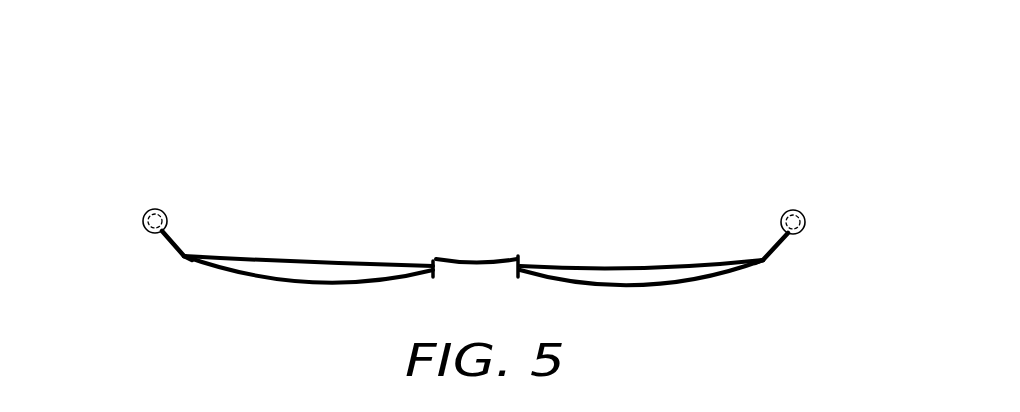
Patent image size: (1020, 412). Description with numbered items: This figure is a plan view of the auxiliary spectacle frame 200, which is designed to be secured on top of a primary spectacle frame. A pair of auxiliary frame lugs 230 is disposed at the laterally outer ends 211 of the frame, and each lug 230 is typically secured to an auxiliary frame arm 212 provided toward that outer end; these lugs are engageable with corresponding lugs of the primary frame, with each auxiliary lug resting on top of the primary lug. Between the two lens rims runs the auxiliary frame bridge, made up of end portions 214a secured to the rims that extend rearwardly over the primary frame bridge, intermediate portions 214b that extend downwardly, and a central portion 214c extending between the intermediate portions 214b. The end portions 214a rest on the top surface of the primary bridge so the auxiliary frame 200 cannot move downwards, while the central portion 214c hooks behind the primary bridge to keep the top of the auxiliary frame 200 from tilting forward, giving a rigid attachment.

The auxiliary spectacle frame 200 is at (489, 201).
The laterally outer ends 211 is at (127, 238).
The auxiliary frame arms 212 is at (168, 249).
The end portions 214a is at (433, 258).
The intermediate portion 214b is at (517, 258).
The central portion 214c is at (463, 257).
The auxiliary frame lugs 230 is at (158, 209).